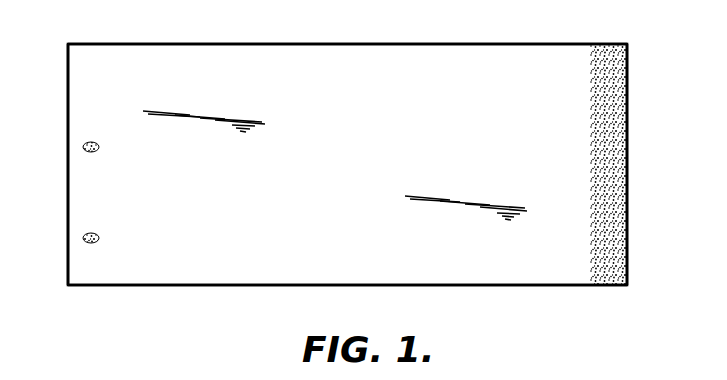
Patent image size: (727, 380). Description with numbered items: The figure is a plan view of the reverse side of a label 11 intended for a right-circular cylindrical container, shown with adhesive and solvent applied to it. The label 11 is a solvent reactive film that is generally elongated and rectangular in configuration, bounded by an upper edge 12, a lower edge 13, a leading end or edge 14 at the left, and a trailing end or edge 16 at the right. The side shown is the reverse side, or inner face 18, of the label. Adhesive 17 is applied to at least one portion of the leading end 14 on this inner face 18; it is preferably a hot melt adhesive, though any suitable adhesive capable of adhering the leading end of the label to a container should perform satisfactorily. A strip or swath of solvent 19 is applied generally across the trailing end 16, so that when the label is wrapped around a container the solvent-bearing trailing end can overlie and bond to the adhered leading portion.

The label 11 is at (126, 26).
The upper edge 12 is at (326, 44).
The lower edge 13 is at (355, 286).
The leading end 14 is at (68, 197).
The trailing end 16 is at (627, 108).
The adhesive 17 is at (83, 146).
The inner face 18 is at (342, 168).
The solvent 19 is at (613, 203).